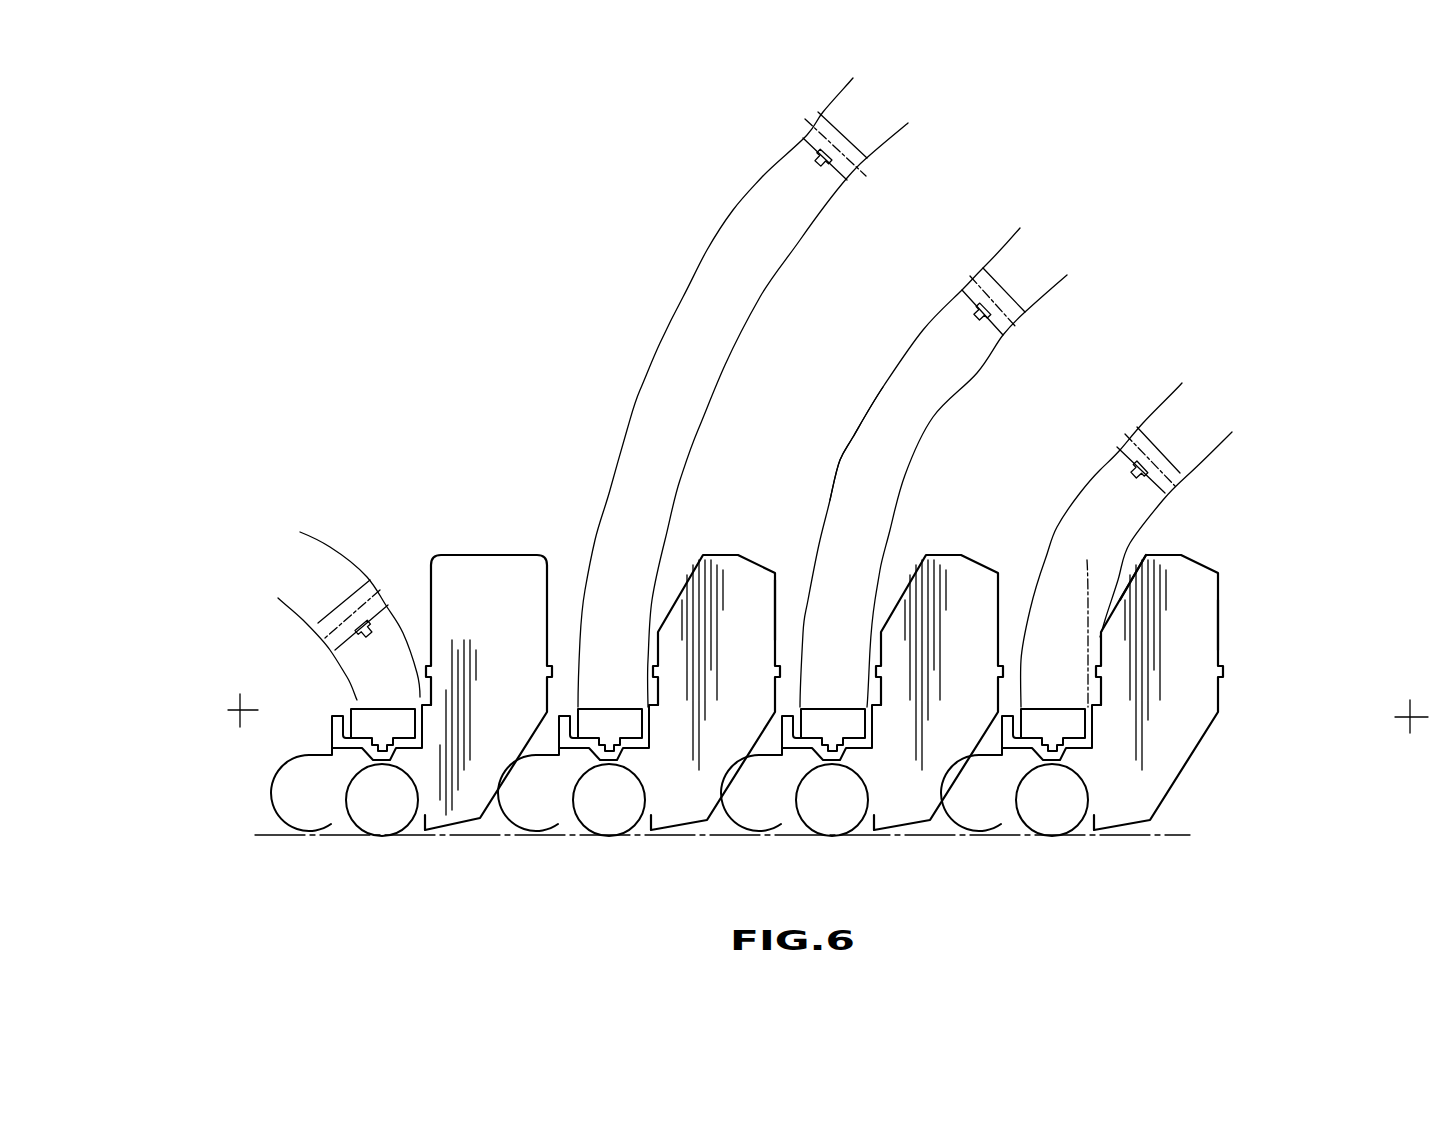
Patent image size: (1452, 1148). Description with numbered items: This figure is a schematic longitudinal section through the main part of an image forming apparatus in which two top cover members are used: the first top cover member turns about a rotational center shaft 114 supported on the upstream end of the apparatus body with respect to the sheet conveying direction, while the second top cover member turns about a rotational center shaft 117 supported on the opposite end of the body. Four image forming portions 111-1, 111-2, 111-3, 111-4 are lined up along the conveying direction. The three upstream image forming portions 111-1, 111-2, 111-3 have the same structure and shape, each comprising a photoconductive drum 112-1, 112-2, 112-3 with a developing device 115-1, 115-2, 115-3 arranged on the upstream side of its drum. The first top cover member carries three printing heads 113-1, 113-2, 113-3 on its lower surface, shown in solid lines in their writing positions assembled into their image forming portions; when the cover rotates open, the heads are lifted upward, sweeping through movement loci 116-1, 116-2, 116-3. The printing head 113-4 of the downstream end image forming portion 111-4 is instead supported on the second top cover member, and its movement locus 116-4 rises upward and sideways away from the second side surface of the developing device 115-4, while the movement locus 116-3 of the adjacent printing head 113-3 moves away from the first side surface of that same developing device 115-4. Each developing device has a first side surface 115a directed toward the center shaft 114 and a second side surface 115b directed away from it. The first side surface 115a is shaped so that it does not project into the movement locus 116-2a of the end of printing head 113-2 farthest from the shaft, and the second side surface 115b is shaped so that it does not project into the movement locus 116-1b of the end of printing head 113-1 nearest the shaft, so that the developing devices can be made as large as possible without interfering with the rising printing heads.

The image forming portion 111-1 is at (1132, 682).
The image forming portion 111-2 is at (880, 670).
The image forming portion 111-3 is at (639, 675).
The image forming portion 111-4 is at (411, 671).
The photoconductive drum 112-1 is at (1057, 825).
The photoconductive drum 112-2 is at (835, 825).
The photoconductive drum 112-3 is at (617, 827).
The printing head 113-1 is at (1070, 727).
The printing head 113-2 is at (828, 713).
The printing head 113-3 is at (608, 713).
The printing head 113-4 is at (388, 717).
The rotational center shaft 114 is at (1405, 710).
The developing device 115-1 is at (1143, 803).
The developing device 115-2 is at (922, 807).
The developing device 115-3 is at (700, 807).
The developing device 115-4 is at (467, 807).
The first side surface 115a is at (777, 600).
The second side surface 115b is at (1135, 560).
The movement locus 116-1 is at (1130, 552).
The movement locus 116-1b is at (1087, 560).
The movement locus 116-2 is at (930, 440).
The movement locus 116-2a is at (852, 452).
The movement locus 116-3 is at (707, 410).
The movement locus 116-4 is at (278, 598).
The rotational center shaft 117 is at (288, 680).